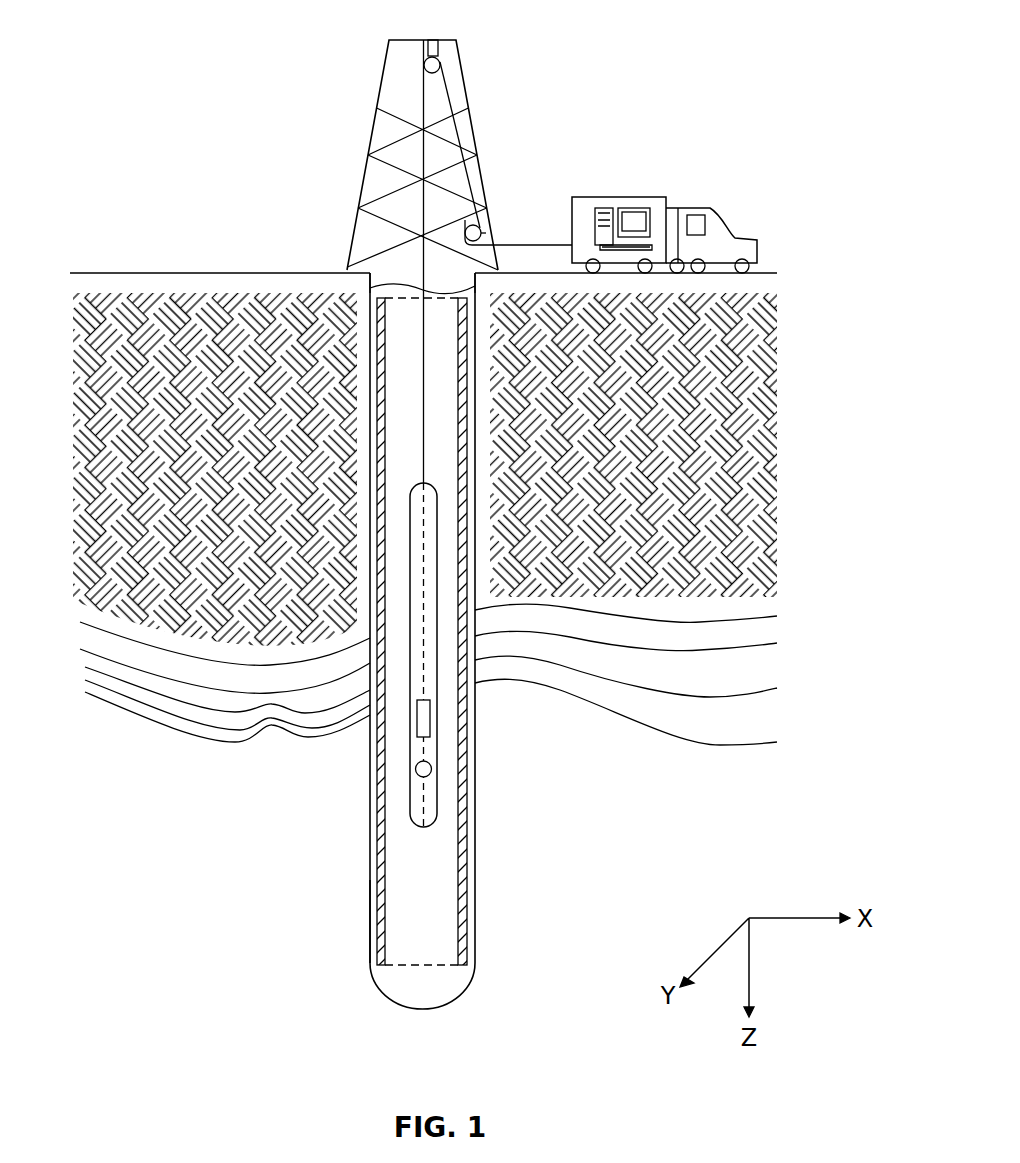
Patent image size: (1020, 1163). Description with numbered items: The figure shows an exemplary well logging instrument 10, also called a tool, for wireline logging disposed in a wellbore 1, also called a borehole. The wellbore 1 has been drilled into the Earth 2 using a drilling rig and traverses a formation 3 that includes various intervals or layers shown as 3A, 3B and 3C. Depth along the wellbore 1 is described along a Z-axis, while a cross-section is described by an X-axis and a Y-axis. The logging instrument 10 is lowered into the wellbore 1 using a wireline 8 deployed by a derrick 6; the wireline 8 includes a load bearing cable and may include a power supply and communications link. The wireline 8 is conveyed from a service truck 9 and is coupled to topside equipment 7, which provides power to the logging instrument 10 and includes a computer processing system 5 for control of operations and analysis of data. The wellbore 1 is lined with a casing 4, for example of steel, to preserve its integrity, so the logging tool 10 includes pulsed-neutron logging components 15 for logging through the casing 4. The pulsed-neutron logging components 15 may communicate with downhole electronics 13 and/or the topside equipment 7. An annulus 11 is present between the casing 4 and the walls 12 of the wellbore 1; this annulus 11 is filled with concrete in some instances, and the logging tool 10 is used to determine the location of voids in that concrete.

The wellbore 1 is at (386, 998).
The Earth 2 is at (170, 322).
The formation 3 is at (718, 730).
The layer 3A is at (770, 633).
The layer 3B is at (770, 672).
The layer 3C is at (770, 725).
The casing 4 is at (368, 308).
The computer processing system 5 is at (630, 210).
The derrick 6 is at (394, 40).
The topside equipment 7 is at (628, 198).
The wireline 8 is at (418, 150).
The service truck 9 is at (733, 237).
The well logging instrument 10 is at (423, 827).
The annulus 11 is at (469, 940).
The walls of the wellbore 12 is at (478, 905).
The downhole electronics 13 is at (417, 727).
The pulsed-neutron logging components 15 is at (432, 770).